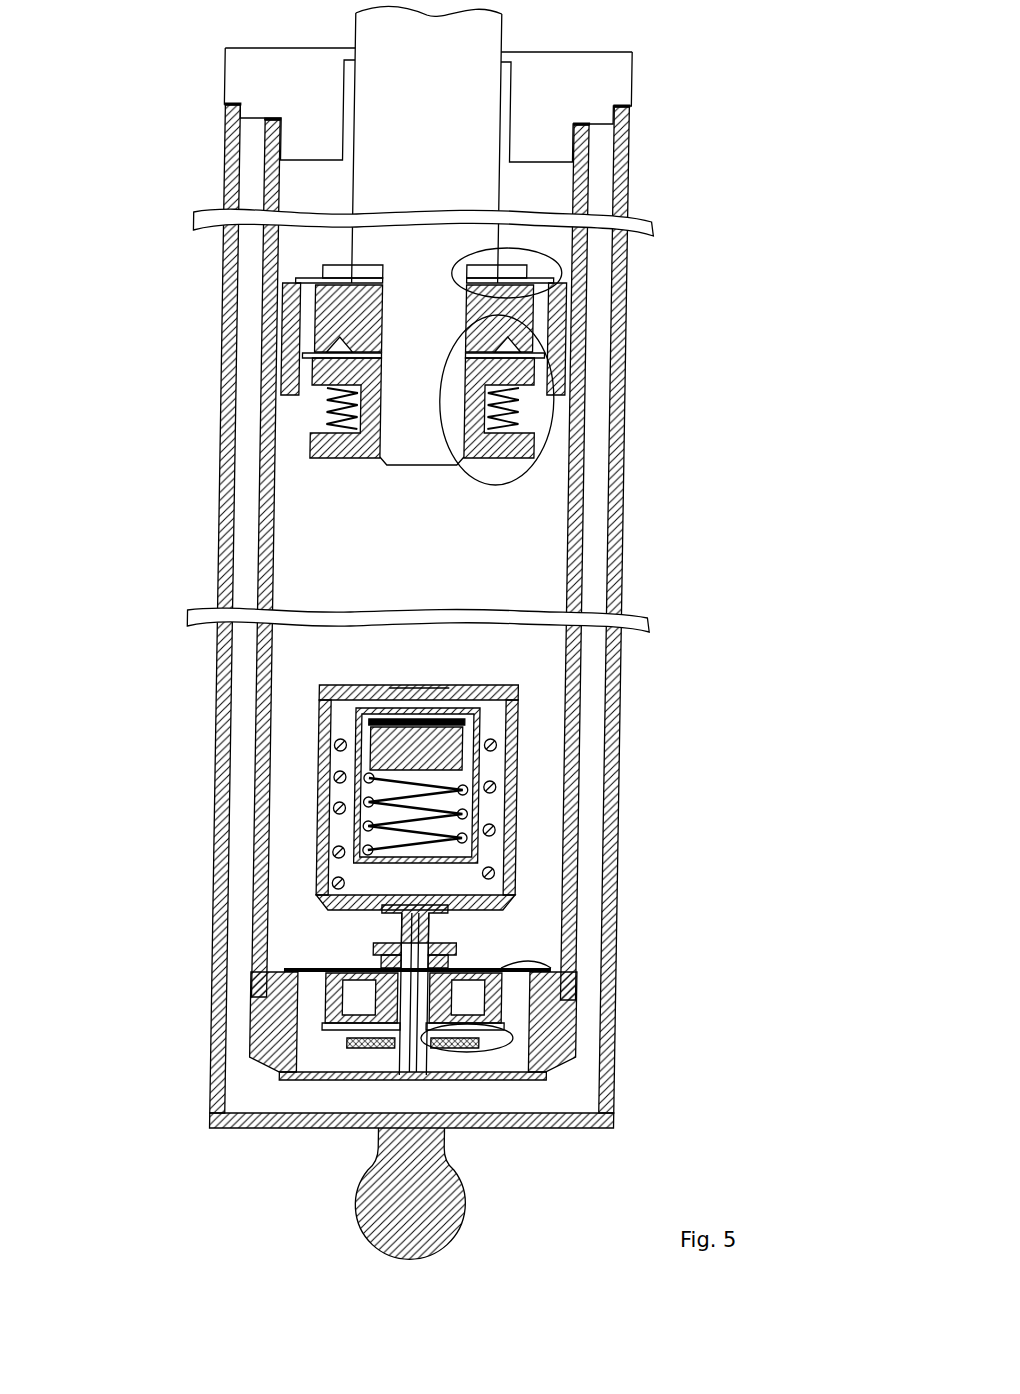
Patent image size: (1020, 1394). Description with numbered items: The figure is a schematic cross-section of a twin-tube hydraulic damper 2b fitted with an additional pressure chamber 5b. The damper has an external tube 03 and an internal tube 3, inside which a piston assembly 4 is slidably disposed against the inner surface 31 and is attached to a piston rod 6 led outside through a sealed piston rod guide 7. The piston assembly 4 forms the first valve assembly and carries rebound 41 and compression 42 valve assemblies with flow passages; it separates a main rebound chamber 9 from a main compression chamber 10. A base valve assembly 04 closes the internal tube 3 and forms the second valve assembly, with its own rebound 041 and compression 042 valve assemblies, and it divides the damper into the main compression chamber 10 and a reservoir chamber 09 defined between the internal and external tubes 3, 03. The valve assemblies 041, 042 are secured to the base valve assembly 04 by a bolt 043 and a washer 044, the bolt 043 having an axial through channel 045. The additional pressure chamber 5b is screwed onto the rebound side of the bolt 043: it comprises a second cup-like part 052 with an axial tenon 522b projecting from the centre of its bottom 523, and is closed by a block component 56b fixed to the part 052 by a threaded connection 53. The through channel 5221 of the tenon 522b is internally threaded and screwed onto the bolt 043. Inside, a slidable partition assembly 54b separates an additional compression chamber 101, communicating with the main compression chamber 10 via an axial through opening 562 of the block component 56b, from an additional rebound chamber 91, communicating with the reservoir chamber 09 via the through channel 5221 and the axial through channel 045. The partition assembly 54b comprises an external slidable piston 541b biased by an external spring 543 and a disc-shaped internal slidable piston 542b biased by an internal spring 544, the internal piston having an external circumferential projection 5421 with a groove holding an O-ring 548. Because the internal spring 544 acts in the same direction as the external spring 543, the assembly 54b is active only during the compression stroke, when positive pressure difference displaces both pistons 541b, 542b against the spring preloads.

The twin-tube hydraulic damper 2b is at (407, 677).
The external tube 03 is at (238, 123).
The internal tube 3 is at (267, 180).
The piston rod 6 is at (385, 27).
The piston rod guide 7 is at (327, 72).
The main rebound chamber 9 is at (306, 252).
The main compression chamber 10 is at (312, 478).
The piston assembly 4 is at (318, 299).
The rebound valve assembly 41 is at (555, 432).
The compression valve assembly 42 is at (557, 265).
The inner surface 31 is at (557, 478).
The block component 56b is at (457, 690).
The axial through opening 562 is at (417, 691).
The threaded connection 53 is at (515, 708).
The bottom 523 is at (490, 909).
The external spring 543 is at (497, 835).
The additional compression chamber 101 is at (435, 732).
The external slidable piston 541b is at (485, 791).
The internal spring 544 is at (505, 805).
The second cup-like part 052 is at (327, 735).
The external circumferential projection 5421 is at (318, 738).
The internal slidable piston 542b is at (328, 763).
The additional rebound chamber 91 is at (490, 852).
The O-ring 548 is at (505, 754).
The slidable partition assembly 54b is at (326, 795).
The through channel 5221 is at (413, 906).
The axial tenon 522b is at (383, 928).
The washer 044 is at (380, 953).
The additional pressure chamber 5b is at (420, 785).
The bolt 043 is at (385, 1060).
The rebound valve assembly 041 is at (533, 959).
The base valve assembly 04 is at (350, 1005).
The axial through channel 045 is at (345, 1037).
The compression valve assembly 042 is at (512, 1037).
The reservoir chamber 09 is at (275, 1098).